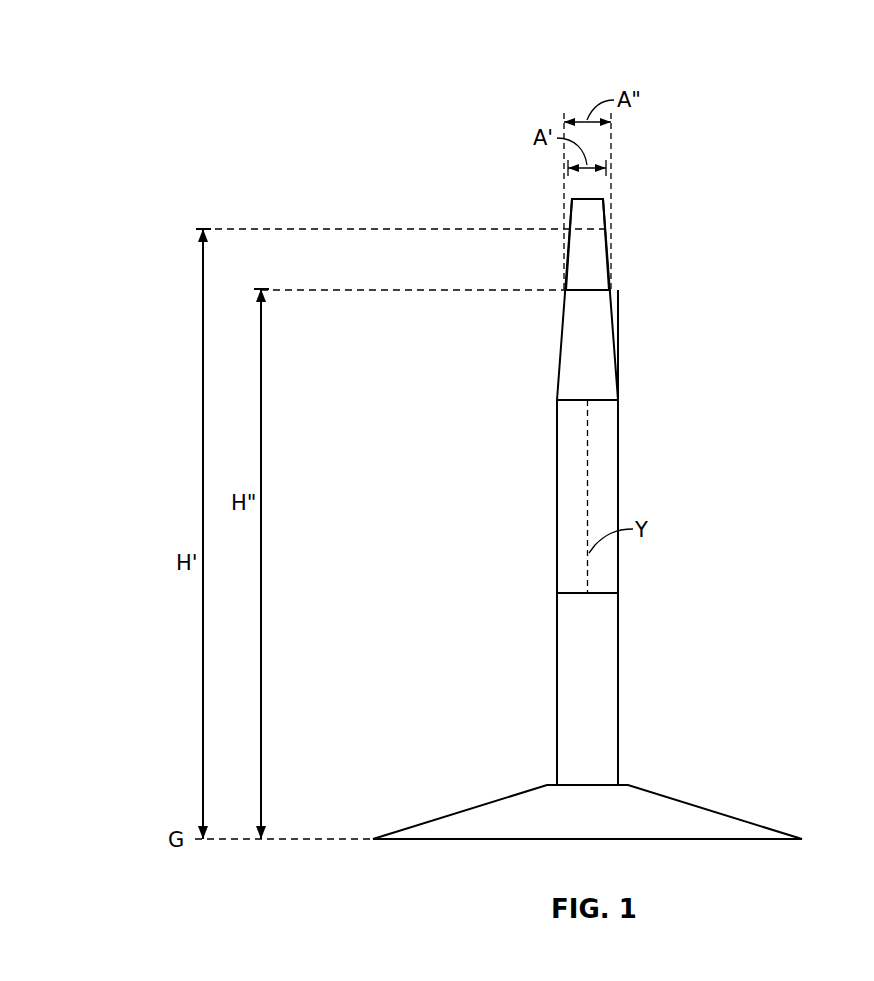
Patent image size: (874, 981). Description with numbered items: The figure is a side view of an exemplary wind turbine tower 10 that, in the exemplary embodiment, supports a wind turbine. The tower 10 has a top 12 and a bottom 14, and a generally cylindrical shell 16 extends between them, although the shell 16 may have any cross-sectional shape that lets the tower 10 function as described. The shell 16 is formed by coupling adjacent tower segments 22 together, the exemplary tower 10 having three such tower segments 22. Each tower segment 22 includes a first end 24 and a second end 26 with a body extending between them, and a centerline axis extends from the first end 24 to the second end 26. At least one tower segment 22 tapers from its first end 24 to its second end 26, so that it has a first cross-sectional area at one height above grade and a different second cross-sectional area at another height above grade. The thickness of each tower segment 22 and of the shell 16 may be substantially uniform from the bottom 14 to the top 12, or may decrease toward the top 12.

The wind turbine tower 10 is at (214, 93).
The top 12 is at (595, 198).
The bottom 14 is at (553, 784).
The shell 16 is at (534, 486).
The tower segment 22 is at (708, 537).
The first end 24 is at (582, 592).
The second end 26 is at (575, 402).